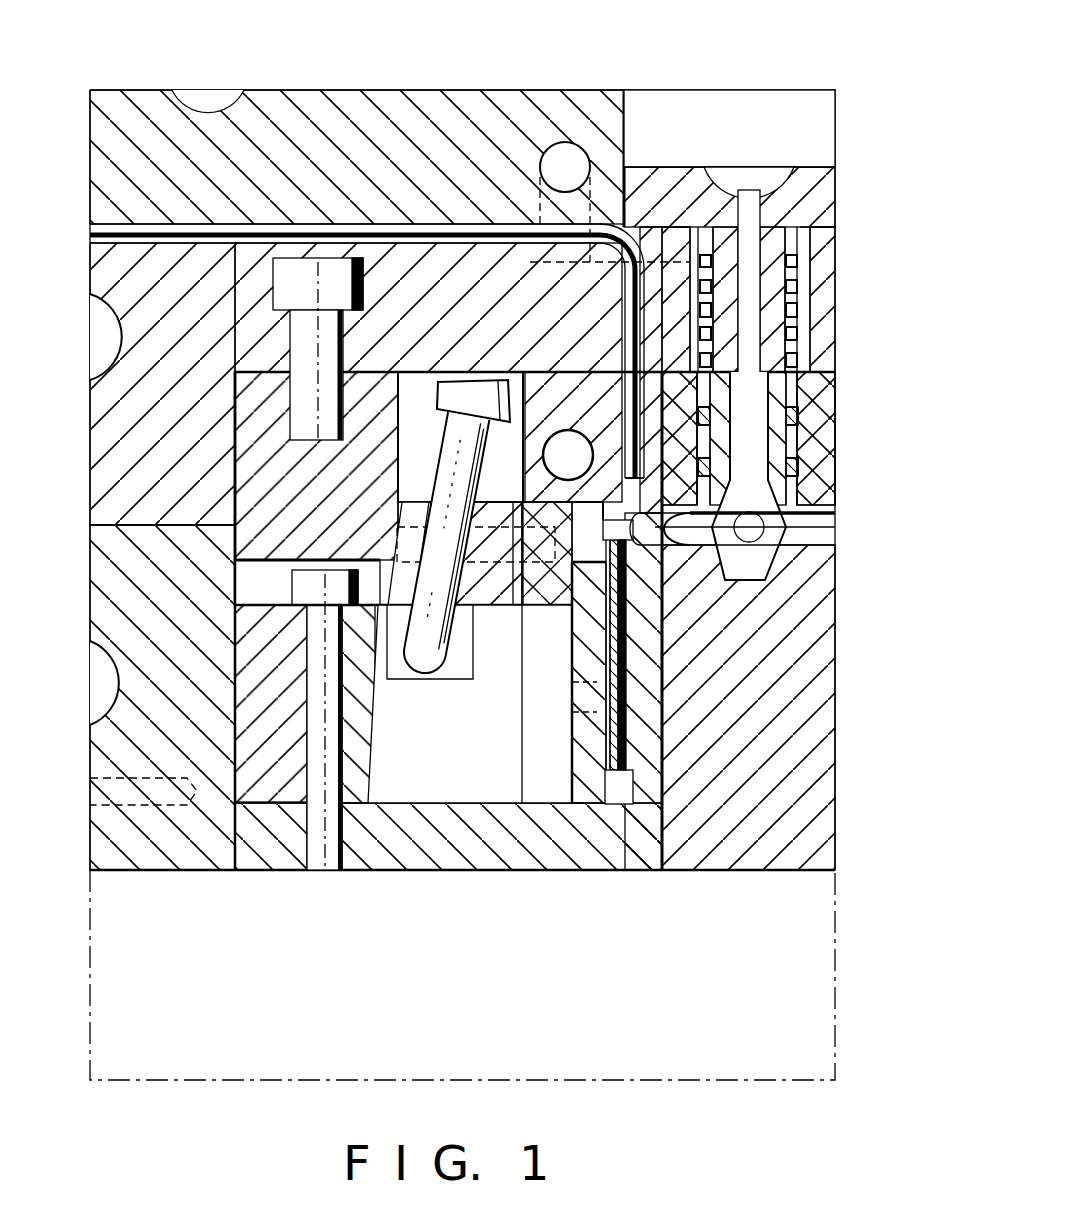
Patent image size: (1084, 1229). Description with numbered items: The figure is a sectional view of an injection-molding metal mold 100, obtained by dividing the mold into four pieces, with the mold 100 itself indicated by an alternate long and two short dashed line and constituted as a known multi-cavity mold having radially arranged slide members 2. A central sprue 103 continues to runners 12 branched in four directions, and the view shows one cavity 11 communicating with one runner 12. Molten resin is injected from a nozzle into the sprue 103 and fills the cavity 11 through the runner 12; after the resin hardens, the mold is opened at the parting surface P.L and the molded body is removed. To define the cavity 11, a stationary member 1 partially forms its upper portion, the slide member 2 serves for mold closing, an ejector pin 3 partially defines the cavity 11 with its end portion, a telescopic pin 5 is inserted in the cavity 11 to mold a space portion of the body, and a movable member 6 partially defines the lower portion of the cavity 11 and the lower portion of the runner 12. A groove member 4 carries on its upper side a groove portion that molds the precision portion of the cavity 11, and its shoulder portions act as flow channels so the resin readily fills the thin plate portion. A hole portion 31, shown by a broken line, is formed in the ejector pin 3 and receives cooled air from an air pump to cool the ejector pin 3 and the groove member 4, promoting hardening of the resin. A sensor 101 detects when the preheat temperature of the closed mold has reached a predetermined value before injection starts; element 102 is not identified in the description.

The metal mold 100 is at (585, 88).
The sensor 101 is at (367, 258).
The cooling pipe 102 is at (590, 420).
The sprue 103 is at (778, 205).
The stationary member 1 is at (648, 465).
The slide member 2 is at (522, 505).
The parting surface P.L is at (835, 513).
The runner 12 is at (655, 540).
The telescopic pin 5 is at (625, 633).
The cavity 11 is at (522, 610).
The hole portion 31 is at (570, 697).
The ejector pin 3 is at (587, 763).
The groove member 4 is at (617, 633).
The movable member 6 is at (655, 740).